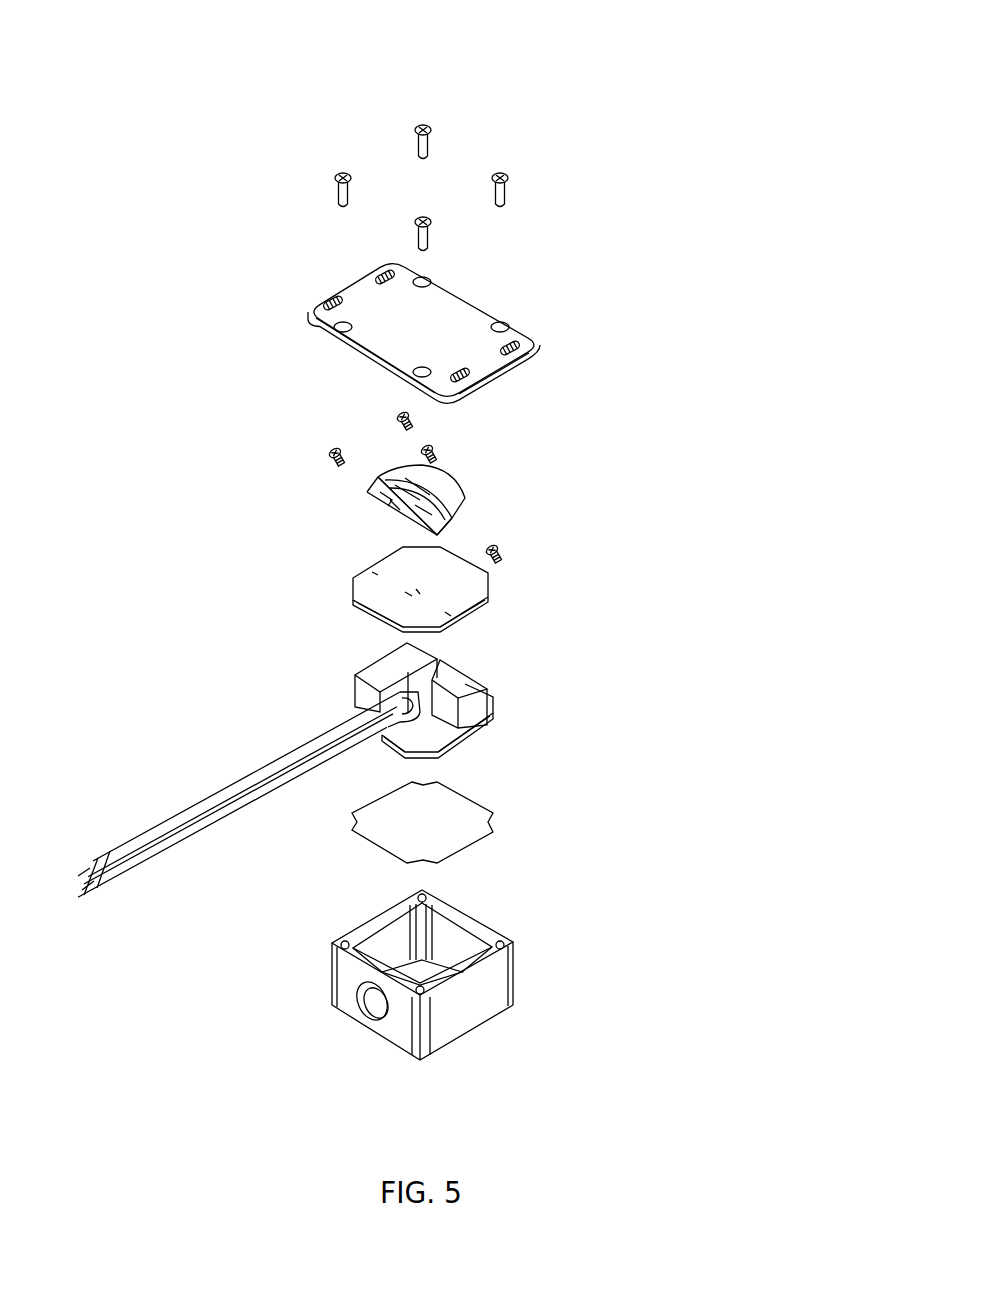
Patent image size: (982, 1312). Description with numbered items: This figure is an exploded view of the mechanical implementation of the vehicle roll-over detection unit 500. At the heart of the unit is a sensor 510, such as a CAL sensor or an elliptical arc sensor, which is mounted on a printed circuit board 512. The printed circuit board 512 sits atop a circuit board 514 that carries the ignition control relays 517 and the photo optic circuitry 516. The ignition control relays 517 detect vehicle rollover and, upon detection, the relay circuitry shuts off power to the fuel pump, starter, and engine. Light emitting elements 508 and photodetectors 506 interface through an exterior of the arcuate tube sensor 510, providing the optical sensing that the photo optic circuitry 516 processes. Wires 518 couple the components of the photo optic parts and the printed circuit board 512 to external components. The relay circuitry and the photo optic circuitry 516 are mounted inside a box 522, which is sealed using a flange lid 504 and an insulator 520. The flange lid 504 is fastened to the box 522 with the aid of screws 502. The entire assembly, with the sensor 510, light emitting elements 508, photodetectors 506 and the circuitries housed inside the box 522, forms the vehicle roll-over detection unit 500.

The sensor assembly 500 is at (766, 63).
The screws 502 is at (502, 174).
The flange lid 504 is at (468, 300).
The photodetectors 506 is at (412, 415).
The light emitting elements 508 is at (340, 463).
The sensor 510 is at (455, 485).
The printed circuit board 512 is at (490, 586).
The circuit board 514 is at (491, 722).
The photo optic circuitry 516 is at (460, 692).
The ignition control relays 517 is at (378, 672).
The wires 518 is at (168, 823).
The insulator 520 is at (467, 828).
The box 522 is at (500, 980).